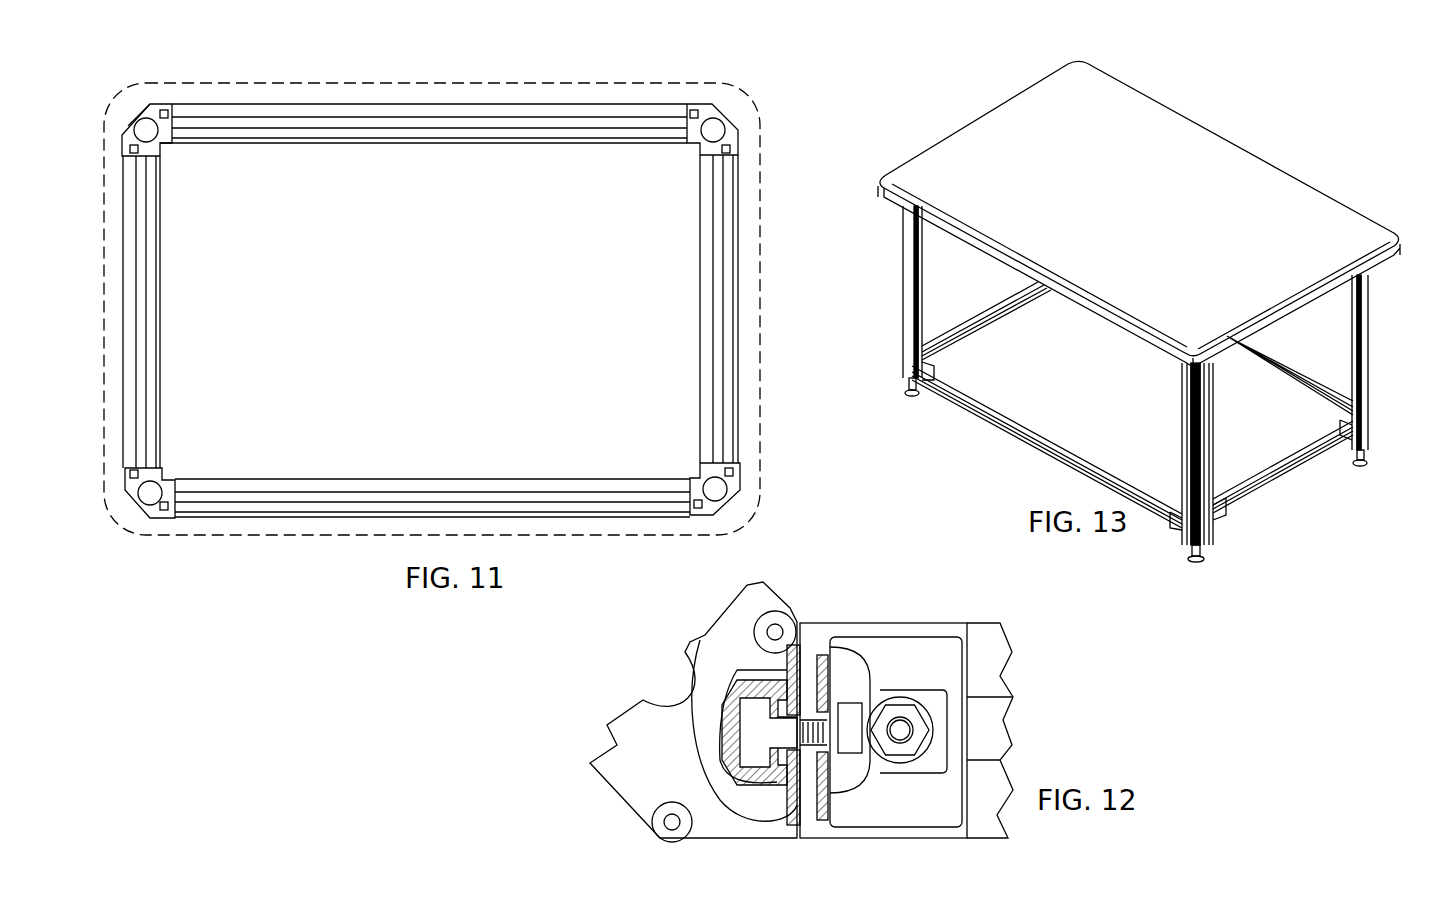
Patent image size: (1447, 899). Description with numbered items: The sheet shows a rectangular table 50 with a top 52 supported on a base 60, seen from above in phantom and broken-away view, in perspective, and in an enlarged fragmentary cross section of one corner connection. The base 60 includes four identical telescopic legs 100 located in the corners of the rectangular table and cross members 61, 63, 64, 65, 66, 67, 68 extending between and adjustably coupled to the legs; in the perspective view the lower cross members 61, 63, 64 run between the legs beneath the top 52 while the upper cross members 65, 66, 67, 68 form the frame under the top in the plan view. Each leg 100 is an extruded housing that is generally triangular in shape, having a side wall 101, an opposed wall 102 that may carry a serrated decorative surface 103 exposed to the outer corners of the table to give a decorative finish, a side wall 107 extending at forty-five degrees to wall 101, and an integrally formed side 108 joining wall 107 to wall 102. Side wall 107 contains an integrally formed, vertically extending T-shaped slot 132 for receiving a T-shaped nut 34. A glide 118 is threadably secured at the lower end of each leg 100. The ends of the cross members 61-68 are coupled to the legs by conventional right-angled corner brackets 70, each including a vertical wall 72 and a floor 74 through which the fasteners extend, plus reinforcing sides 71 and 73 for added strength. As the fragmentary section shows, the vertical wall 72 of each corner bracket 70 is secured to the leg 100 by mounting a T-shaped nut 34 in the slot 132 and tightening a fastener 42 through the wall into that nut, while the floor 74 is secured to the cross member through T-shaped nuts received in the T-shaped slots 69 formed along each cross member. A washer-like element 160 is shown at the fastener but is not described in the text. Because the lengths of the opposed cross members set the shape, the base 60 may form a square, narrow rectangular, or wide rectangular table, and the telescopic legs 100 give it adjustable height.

In FIG. 12, the T-shaped nut 34 is at (760, 800).
In FIG. 12, the fastener 42 is at (910, 705).
In FIG. 11, the table 50 is at (785, 90).
In FIG. 13, the table 50 is at (1277, 98).
In FIG. 11, the top 52 is at (556, 82).
In FIG. 13, the top 52 is at (1160, 120).
In FIG. 11, the base 60 is at (318, 92).
In FIG. 13, the cross member 61 is at (972, 333).
In FIG. 13, the cross member 63 is at (1298, 477).
In FIG. 13, the cross member 64 is at (972, 405).
In FIG. 11, the cross member 65 is at (160, 275).
In FIG. 11, the cross member 66 is at (395, 126).
In FIG. 11, the cross member 67 is at (700, 275).
In FIG. 11, the cross member 68 is at (435, 485).
In FIG. 12, the cross member 68 is at (985, 625).
In FIG. 11, the T-shaped slot 69 is at (240, 125).
In FIG. 13, the T-shaped slot 69 is at (978, 306).
In FIG. 12, the T-shaped slot 69 is at (985, 700).
In FIG. 13, the corner bracket 70 is at (905, 382).
In FIG. 12, the corner bracket 70 is at (905, 622).
In FIG. 12, the reinforcing side 71 is at (935, 840).
In FIG. 12, the vertical wall 72 is at (850, 748).
In FIG. 12, the reinforcing side 73 is at (930, 625).
In FIG. 12, the floor 74 is at (965, 660).
In FIG. 11, the telescopic leg 100 is at (185, 106).
In FIG. 13, the telescopic leg 100 is at (938, 244).
In FIG. 12, the telescopic leg 100 is at (800, 560).
In FIG. 12, the side wall 101 is at (773, 590).
In FIG. 13, the wall 102 is at (1206, 418).
In FIG. 13, the serrated decorative surface 103 is at (1188, 395).
In FIG. 12, the serrated decorative surface 103 is at (612, 790).
In FIG. 12, the side wall 107 is at (793, 660).
In FIG. 13, the side 108 is at (1210, 466).
In FIG. 12, the side 108 is at (702, 840).
In FIG. 13, the glide 118 is at (908, 398).
In FIG. 12, the T-shaped slot 132 is at (706, 640).
In FIG. 12, the washer 160 is at (855, 765).